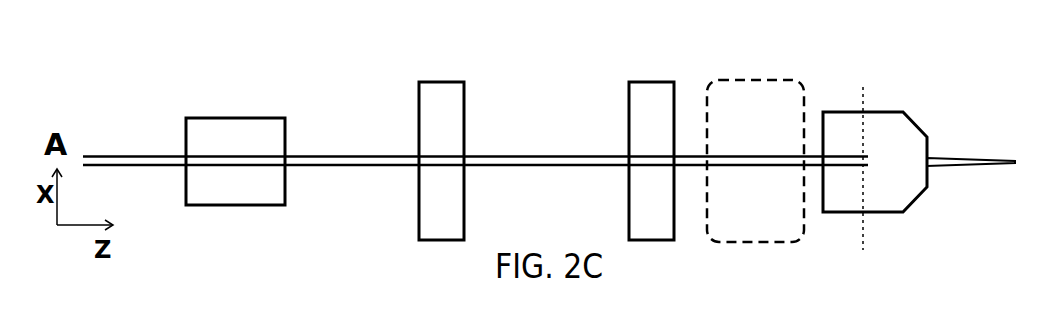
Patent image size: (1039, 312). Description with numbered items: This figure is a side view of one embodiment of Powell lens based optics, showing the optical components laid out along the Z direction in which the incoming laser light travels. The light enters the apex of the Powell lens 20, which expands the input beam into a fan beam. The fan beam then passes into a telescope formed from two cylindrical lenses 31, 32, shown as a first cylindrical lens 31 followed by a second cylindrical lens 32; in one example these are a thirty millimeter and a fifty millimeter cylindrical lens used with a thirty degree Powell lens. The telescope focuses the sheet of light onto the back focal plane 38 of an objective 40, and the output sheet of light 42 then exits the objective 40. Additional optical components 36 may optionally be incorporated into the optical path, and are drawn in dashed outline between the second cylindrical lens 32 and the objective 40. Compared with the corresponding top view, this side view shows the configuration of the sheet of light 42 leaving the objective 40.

The Powell lens 20 is at (240, 117).
The first cylindrical lens 31 is at (445, 88).
The second cylindrical lens 32 is at (652, 82).
The additional optical components 36 is at (768, 80).
The back focal plane 38 is at (865, 87).
The objective 40 is at (915, 118).
The output sheet of light 42 is at (968, 158).